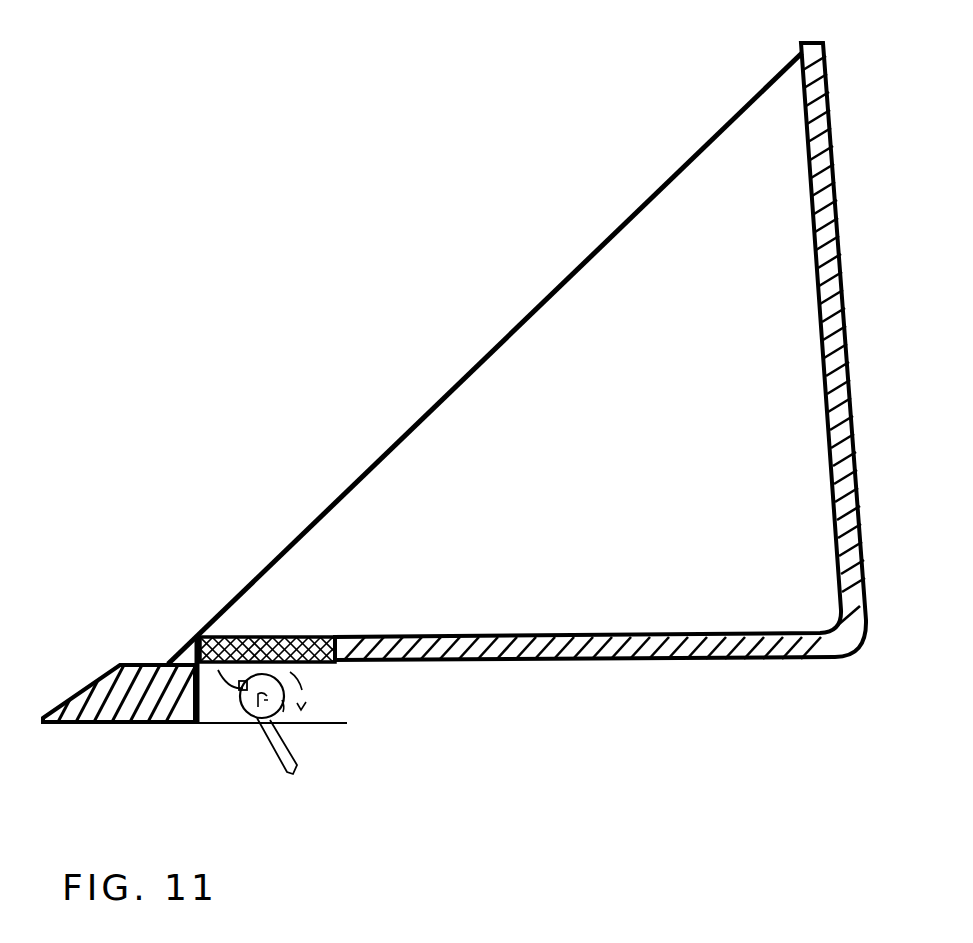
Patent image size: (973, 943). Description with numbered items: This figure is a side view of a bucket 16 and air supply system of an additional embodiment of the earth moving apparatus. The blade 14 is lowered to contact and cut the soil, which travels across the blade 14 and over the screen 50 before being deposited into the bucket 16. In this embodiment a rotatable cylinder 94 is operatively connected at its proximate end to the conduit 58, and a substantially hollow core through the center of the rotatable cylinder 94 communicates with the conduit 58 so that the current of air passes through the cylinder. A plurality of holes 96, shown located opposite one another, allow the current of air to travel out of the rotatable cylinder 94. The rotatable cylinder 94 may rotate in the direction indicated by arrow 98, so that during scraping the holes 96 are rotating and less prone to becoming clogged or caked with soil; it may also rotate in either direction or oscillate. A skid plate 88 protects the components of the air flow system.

The bucket 16 is at (843, 262).
The screen 50 is at (320, 637).
The blade 14 is at (92, 725).
The skid plate 88 is at (225, 730).
The rotatable cylinder 94 is at (243, 727).
The holes 96 is at (232, 637).
The arrow 98 is at (300, 697).
The conduit 58 is at (288, 770).